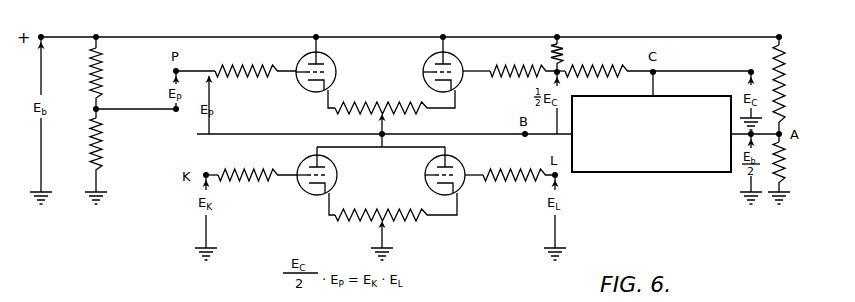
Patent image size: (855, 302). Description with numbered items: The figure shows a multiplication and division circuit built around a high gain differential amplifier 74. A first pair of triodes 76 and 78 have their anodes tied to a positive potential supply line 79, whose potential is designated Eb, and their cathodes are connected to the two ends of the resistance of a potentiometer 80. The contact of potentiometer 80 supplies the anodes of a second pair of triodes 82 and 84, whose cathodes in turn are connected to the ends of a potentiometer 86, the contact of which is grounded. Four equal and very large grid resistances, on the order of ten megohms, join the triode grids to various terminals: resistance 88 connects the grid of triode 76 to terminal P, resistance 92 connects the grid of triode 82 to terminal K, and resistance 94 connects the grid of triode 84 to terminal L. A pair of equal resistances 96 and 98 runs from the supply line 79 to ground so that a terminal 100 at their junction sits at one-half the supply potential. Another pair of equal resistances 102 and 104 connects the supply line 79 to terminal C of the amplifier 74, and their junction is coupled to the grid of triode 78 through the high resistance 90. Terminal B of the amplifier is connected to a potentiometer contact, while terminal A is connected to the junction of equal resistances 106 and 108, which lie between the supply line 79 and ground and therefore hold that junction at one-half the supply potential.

The high gain differential amplifier 74 is at (644, 172).
The triode 76 is at (334, 70).
The triode 78 is at (422, 70).
The positive potential supply line 79 is at (211, 37).
The potentiometer 80 is at (365, 108).
The triode 82 is at (335, 191).
The triode 84 is at (460, 170).
The potentiometer 86 is at (371, 208).
The resistance 88 is at (247, 66).
The resistance 90 is at (514, 68).
The resistance 92 is at (241, 170).
The resistance 94 is at (494, 182).
The resistance 96 is at (91, 63).
The resistance 98 is at (90, 155).
The terminal 100 is at (173, 111).
The resistance 102 is at (563, 50).
The resistance 104 is at (598, 78).
The resistance 106 is at (772, 64).
The resistance 108 is at (788, 160).